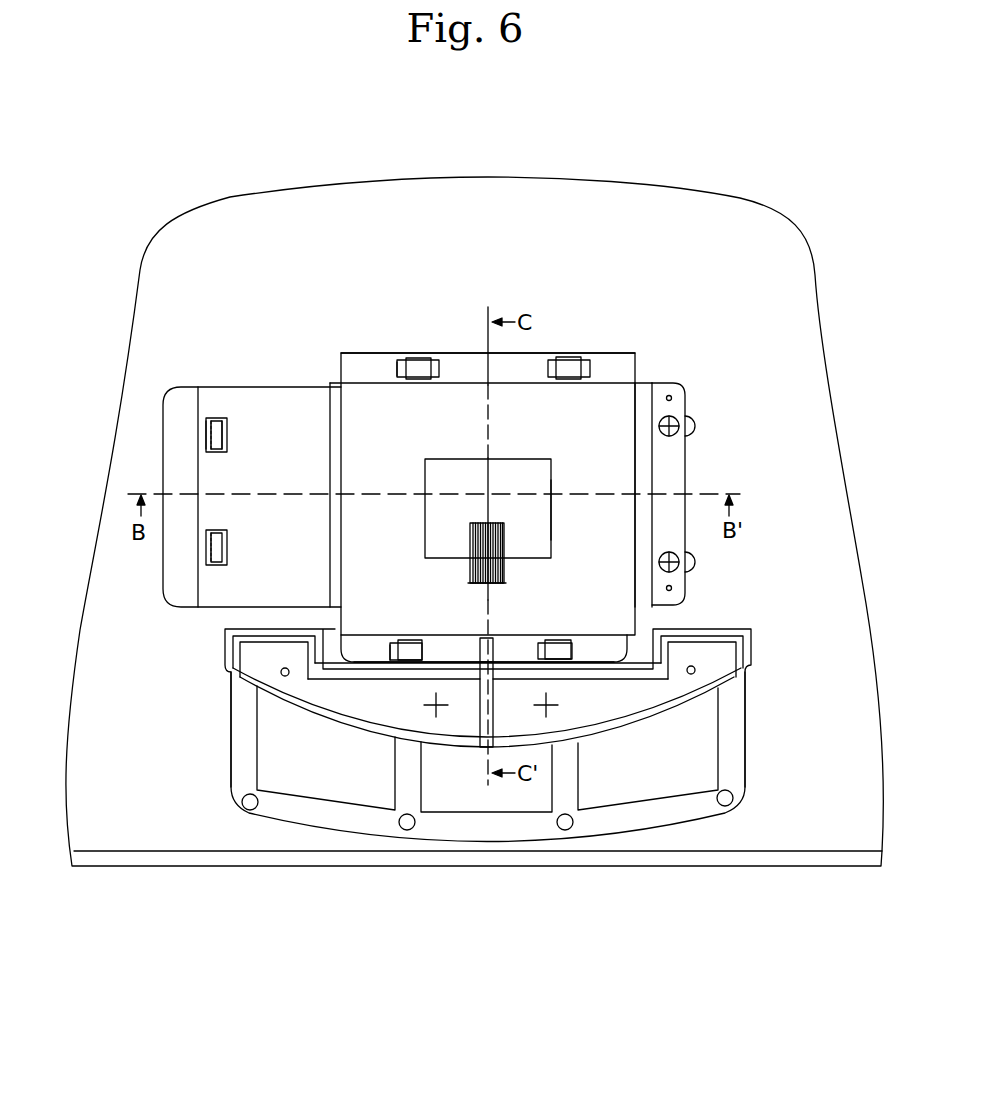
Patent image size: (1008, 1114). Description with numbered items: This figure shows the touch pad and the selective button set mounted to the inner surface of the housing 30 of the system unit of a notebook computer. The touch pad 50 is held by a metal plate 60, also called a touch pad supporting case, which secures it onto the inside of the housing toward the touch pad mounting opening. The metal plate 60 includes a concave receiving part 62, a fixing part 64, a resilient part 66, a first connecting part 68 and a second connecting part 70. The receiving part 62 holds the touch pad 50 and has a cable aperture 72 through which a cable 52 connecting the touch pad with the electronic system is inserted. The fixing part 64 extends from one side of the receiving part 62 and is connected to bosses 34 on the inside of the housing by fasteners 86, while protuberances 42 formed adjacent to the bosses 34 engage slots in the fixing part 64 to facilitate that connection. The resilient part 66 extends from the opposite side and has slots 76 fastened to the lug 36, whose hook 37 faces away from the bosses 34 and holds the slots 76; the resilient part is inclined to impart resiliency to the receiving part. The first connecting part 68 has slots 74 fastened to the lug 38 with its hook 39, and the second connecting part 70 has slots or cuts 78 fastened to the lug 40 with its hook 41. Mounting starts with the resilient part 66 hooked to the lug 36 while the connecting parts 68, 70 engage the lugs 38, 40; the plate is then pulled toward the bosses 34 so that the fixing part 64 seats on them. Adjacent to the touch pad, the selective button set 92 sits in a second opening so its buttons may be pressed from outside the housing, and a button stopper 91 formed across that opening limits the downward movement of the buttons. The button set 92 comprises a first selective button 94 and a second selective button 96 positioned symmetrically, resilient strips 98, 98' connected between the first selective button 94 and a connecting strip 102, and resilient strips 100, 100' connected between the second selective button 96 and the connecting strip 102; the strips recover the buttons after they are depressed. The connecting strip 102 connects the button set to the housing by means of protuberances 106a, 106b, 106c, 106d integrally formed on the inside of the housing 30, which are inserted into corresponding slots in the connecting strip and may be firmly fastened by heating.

The housing 30 is at (832, 486).
The bosses 34 is at (688, 420).
The lug 36 is at (220, 420).
The hook 37 is at (213, 420).
The lug 38 is at (417, 362).
The hook 39 is at (402, 360).
The lug 40 is at (409, 642).
The hook 41 is at (398, 648).
The protuberances 42 is at (670, 395).
The touch pad 50 is at (540, 458).
The flexible cable 52 is at (505, 566).
The metal plate 60 is at (336, 362).
The concave receiving part 62 is at (603, 395).
The fixing part 64 is at (680, 470).
The resilient part 66 is at (287, 392).
The first connecting part 68 is at (533, 362).
The second connecting part 70 is at (517, 650).
The cable aperture 72 is at (551, 525).
The slots 74 is at (437, 352).
The slots 76 is at (228, 432).
The slots or cuts 78 is at (428, 640).
The fasteners 86 is at (680, 431).
The button stopper 91 is at (492, 662).
The selective button set 92 is at (349, 845).
The first selective button 94 is at (740, 665).
The second selective button 96 is at (250, 659).
The resilient strip 98 is at (769, 729).
The resilient strip 98' is at (645, 749).
The resilient strip 100 is at (197, 729).
The resilient strip 100' is at (326, 748).
The connecting strip 102 is at (487, 828).
The protuberance 106a is at (250, 810).
The protuberance 106b is at (407, 830).
The protuberance 106c is at (565, 830).
The protuberance 106d is at (725, 806).